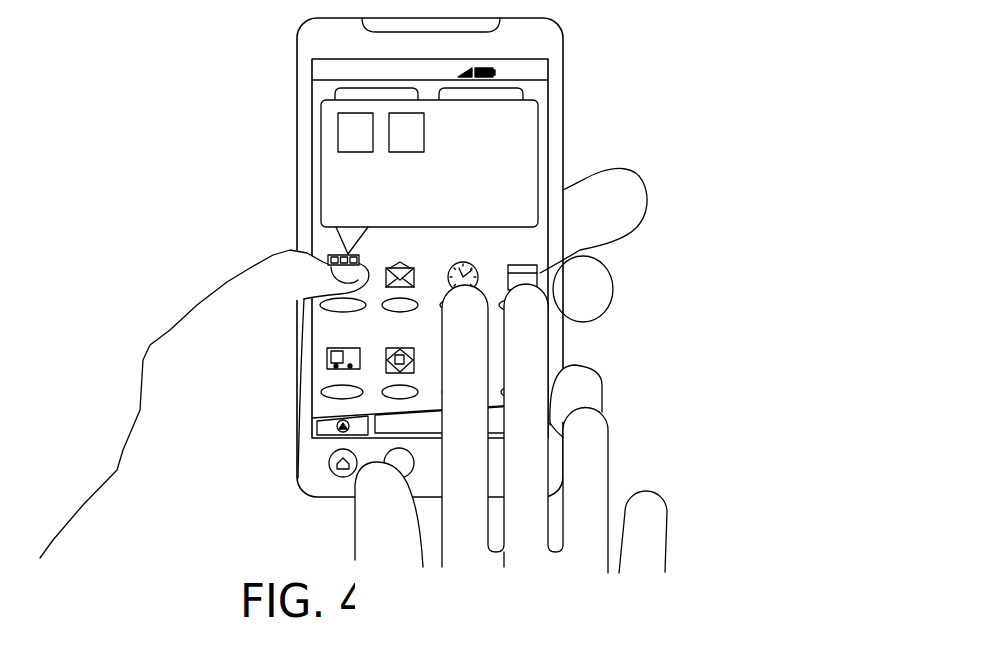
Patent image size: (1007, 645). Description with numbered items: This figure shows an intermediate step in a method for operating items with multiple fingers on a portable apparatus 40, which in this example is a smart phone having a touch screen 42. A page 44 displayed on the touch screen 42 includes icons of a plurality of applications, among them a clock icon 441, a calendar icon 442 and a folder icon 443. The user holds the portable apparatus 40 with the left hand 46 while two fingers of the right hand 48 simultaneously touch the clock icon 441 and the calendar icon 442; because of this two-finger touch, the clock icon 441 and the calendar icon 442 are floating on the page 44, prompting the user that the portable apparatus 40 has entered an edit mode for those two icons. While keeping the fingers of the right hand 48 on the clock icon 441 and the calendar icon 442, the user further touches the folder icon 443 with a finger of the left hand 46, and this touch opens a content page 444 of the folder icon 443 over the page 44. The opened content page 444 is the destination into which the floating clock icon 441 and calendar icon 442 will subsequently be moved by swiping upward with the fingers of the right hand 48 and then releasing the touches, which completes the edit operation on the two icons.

The portable apparatus 40 is at (562, 28).
The touch screen 42 is at (548, 110).
The page 44 is at (540, 238).
The left hand 46 is at (180, 370).
The right hand 48 is at (537, 528).
The clock icon 441 is at (462, 263).
The calendar icon 442 is at (540, 277).
The folder icon 443 is at (333, 255).
The content page 444 is at (320, 152).